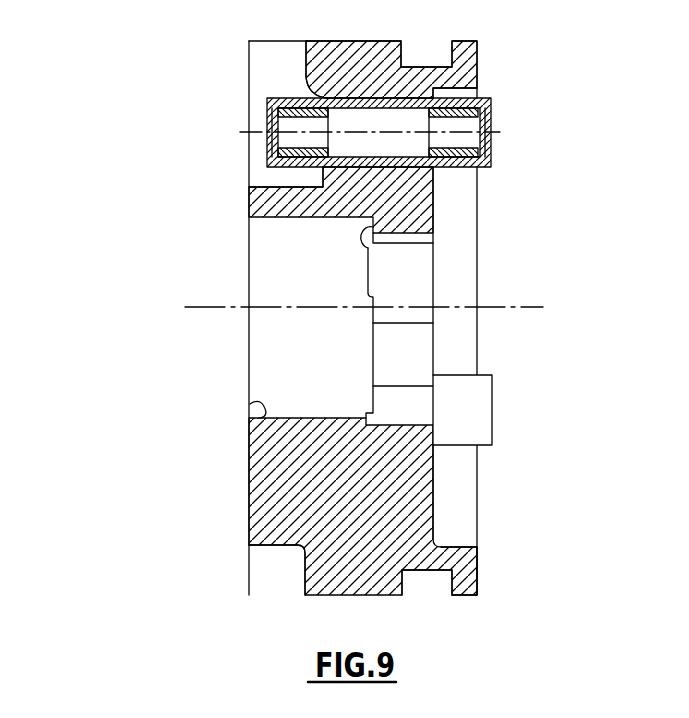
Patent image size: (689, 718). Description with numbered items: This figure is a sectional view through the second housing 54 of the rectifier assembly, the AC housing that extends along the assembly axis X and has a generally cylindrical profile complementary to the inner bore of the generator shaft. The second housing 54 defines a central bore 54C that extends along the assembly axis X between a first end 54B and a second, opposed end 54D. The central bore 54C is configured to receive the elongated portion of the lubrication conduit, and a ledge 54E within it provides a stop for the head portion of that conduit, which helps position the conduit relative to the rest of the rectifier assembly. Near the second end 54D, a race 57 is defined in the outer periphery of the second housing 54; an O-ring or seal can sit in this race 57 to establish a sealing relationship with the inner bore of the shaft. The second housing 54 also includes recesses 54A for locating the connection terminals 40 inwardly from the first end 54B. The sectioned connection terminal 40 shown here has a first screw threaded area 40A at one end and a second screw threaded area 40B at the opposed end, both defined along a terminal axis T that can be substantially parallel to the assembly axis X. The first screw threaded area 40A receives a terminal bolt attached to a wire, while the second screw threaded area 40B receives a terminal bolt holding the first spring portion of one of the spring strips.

The second housing 54 is at (136, 93).
The recesses 54A is at (258, 66).
The first end 54B is at (249, 205).
The central bore 54C is at (250, 410).
The second end 54D is at (477, 575).
The ledge 54E is at (368, 248).
The race 57 is at (403, 583).
The connection terminal 40 is at (267, 103).
The first screw threaded area 40A is at (293, 152).
The second screw threaded area 40B is at (478, 110).
The terminal axis T is at (500, 132).
The assembly axis X is at (522, 307).